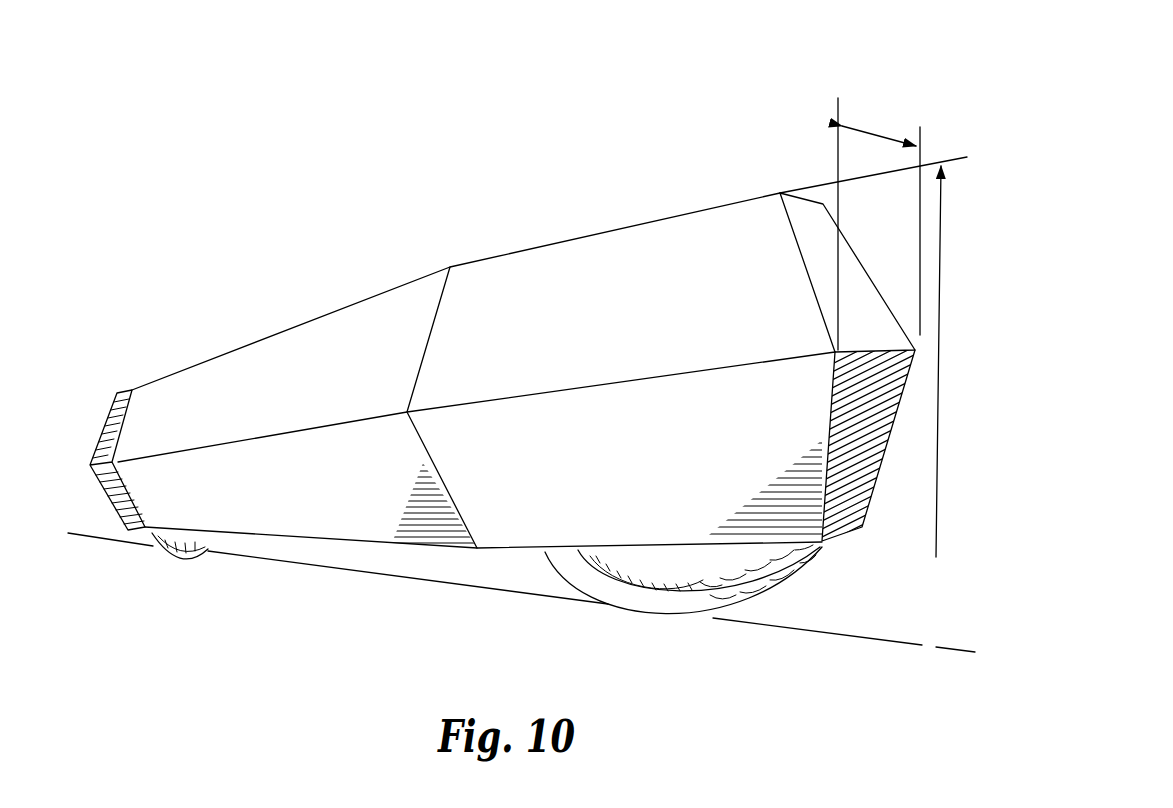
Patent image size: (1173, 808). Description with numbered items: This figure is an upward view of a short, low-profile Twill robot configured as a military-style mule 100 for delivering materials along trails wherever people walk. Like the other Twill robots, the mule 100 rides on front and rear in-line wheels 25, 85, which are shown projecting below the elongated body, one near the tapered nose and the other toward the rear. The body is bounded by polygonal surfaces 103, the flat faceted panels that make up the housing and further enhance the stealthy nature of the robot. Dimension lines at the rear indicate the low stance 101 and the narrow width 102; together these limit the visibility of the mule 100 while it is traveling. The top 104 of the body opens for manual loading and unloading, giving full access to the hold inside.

The mule 100 is at (302, 172).
The polygonal surfaces 103 is at (697, 310).
The low stance 101 is at (922, 515).
The narrow width 102 is at (880, 128).
The top 104 is at (258, 339).
The rear in-line wheel 85 is at (180, 556).
The front in-line wheel 25 is at (648, 617).